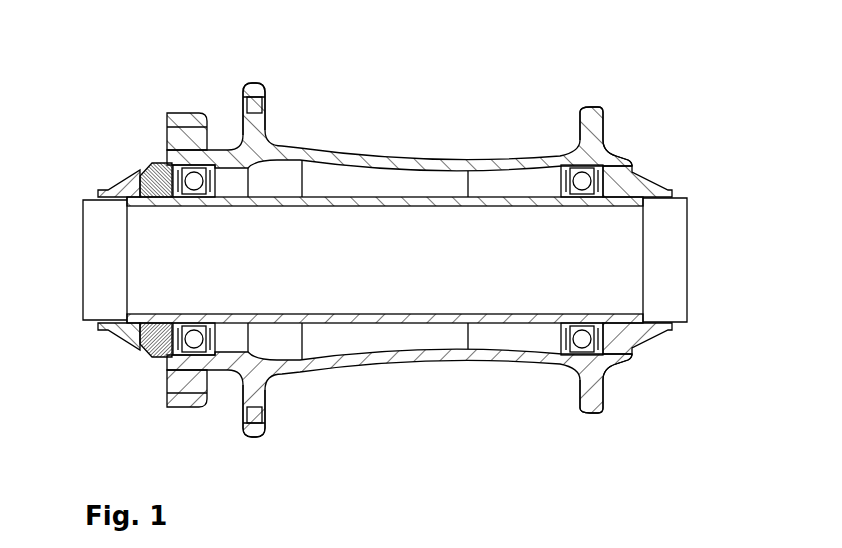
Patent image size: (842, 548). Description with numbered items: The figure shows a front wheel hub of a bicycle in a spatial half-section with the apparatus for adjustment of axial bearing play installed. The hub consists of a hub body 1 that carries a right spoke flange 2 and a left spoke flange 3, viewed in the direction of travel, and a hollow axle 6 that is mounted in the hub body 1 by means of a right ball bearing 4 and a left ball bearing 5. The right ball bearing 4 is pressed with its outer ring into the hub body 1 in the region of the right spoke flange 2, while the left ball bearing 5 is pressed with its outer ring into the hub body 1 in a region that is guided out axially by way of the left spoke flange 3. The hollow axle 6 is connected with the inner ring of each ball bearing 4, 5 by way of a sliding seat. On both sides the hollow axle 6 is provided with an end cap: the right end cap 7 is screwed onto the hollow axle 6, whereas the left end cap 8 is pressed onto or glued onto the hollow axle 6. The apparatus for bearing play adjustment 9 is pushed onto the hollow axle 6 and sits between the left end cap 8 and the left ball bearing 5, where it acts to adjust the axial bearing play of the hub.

The hub body 1 is at (363, 155).
The right spoke flange 2 is at (600, 110).
The left spoke flange 3 is at (255, 86).
The right ball bearing 4 is at (587, 350).
The left ball bearing 5 is at (192, 350).
The hollow axle 6 is at (440, 205).
The right end cap 7 is at (677, 195).
The left end cap 8 is at (93, 197).
The apparatus for bearing play adjustment 9 is at (155, 162).